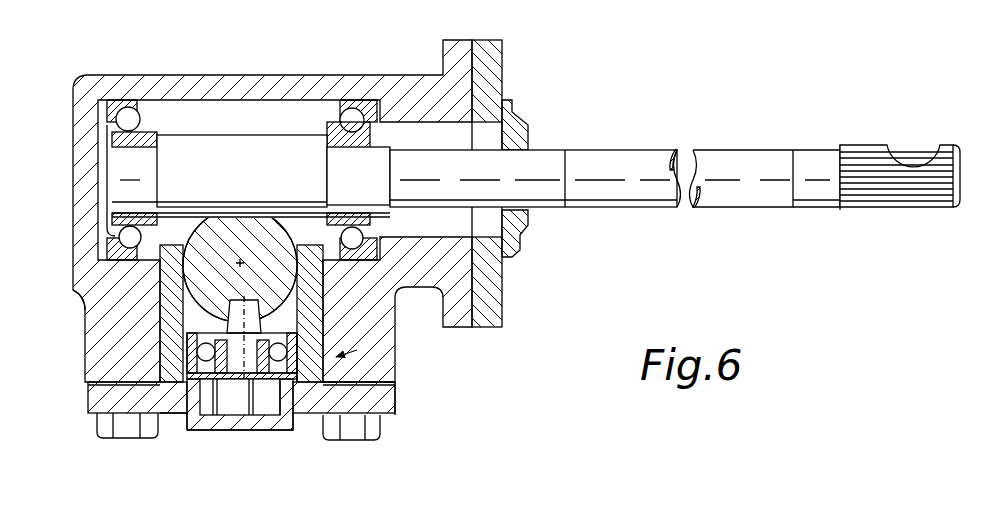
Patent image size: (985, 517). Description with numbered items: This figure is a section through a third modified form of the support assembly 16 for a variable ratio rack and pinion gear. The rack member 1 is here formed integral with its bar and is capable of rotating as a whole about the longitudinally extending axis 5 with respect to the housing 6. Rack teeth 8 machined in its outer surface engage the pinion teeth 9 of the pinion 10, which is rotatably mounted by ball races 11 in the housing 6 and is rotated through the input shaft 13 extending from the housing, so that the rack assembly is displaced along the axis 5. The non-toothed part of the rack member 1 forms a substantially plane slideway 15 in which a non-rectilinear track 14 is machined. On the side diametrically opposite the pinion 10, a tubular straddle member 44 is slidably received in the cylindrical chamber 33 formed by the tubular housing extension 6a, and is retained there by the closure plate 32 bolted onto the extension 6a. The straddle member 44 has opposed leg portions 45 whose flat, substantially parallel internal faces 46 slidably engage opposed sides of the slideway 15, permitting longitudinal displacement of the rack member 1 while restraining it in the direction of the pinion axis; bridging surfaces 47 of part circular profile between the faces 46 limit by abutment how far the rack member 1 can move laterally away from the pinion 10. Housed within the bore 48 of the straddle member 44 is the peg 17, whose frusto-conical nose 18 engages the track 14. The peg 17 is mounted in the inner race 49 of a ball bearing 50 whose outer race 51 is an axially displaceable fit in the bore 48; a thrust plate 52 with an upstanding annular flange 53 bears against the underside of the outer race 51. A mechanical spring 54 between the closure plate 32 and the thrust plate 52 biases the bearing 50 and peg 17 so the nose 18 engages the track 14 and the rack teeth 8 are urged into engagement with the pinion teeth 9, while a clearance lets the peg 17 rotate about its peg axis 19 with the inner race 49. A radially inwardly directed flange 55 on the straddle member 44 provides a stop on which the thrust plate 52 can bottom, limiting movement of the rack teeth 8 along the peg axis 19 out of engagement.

The rack member 1 is at (392, 303).
The longitudinally extending axis 5 is at (232, 240).
The housing 6 is at (95, 248).
The tubular extension of the housing 6a is at (377, 360).
The rack teeth 8 is at (274, 212).
The pinion teeth 9 is at (197, 150).
The pinion 10 is at (145, 165).
The ball races 11 is at (128, 112).
The input shaft 13 is at (633, 197).
The track 14 is at (150, 298).
The slideway 15 is at (391, 320).
The support assembly 16 is at (387, 397).
The peg 17 is at (190, 344).
The nose 18 is at (193, 323).
The peg axis 19 is at (243, 402).
The closure plate 32 is at (397, 410).
The cylindrical chamber 33 is at (382, 437).
The tubular straddle member 44 is at (150, 398).
The leg portions 45 is at (334, 180).
The internal faces 46 is at (198, 232).
The bridging surfaces 47 is at (358, 350).
The bore 48 is at (370, 418).
The inner race 49 is at (267, 400).
The ball bearing 50 is at (138, 415).
The outer race 51 is at (188, 369).
The thrust plate 52 is at (206, 378).
The upstanding annular flange 53 is at (175, 403).
The mechanical spring 54 is at (288, 385).
The radially inwardly directed flange 55 is at (330, 375).